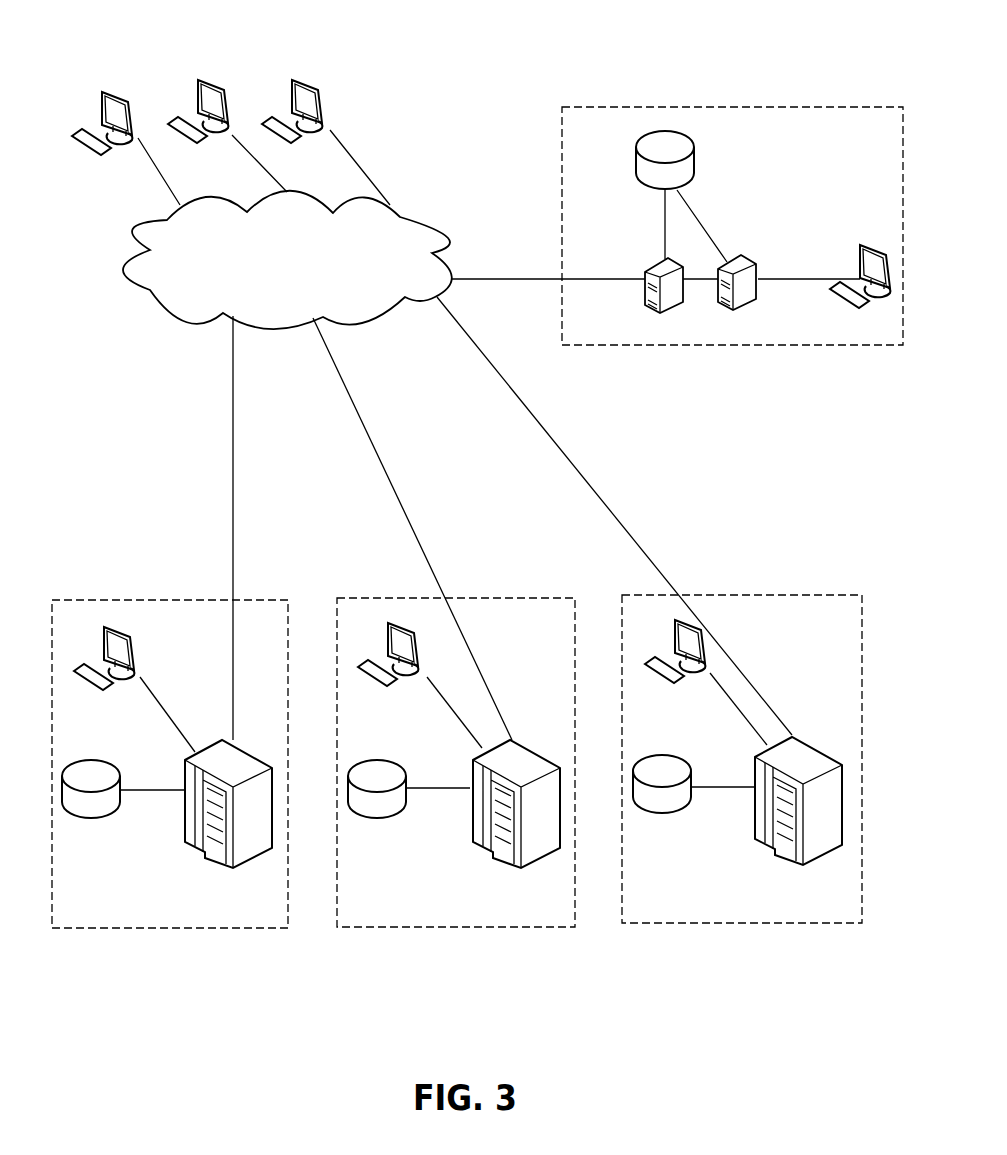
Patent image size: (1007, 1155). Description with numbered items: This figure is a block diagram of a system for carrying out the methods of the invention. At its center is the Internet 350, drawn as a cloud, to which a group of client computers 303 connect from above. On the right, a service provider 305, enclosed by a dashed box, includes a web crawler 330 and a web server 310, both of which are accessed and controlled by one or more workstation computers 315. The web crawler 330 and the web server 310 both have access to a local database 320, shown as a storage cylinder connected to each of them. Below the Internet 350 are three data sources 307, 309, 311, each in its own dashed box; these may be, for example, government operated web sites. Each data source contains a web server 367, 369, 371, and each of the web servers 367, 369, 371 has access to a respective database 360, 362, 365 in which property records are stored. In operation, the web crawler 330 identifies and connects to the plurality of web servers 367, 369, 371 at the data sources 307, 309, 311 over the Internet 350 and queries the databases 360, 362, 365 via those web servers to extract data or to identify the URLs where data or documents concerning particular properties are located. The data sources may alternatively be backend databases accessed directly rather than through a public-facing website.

The client computers 303 is at (162, 78).
The Internet 350 is at (150, 310).
The service provider 305 is at (562, 138).
The local database 320 is at (637, 160).
The web crawler 330 is at (660, 260).
The web server 310 is at (762, 260).
The workstation computer 315 is at (860, 245).
The data source 307 is at (267, 600).
The data source 309 is at (553, 598).
The data source 311 is at (838, 595).
The database 360 is at (103, 755).
The database 362 is at (392, 755).
The database 365 is at (673, 752).
The web server 367 is at (258, 862).
The web server 369 is at (543, 860).
The web server 371 is at (830, 852).